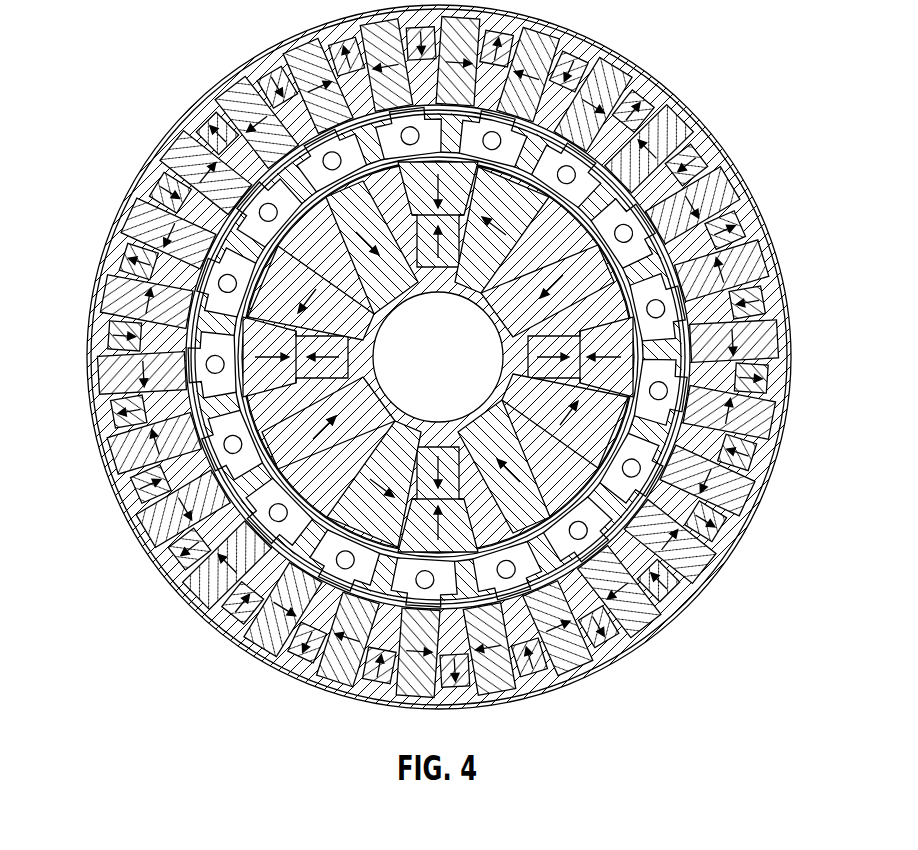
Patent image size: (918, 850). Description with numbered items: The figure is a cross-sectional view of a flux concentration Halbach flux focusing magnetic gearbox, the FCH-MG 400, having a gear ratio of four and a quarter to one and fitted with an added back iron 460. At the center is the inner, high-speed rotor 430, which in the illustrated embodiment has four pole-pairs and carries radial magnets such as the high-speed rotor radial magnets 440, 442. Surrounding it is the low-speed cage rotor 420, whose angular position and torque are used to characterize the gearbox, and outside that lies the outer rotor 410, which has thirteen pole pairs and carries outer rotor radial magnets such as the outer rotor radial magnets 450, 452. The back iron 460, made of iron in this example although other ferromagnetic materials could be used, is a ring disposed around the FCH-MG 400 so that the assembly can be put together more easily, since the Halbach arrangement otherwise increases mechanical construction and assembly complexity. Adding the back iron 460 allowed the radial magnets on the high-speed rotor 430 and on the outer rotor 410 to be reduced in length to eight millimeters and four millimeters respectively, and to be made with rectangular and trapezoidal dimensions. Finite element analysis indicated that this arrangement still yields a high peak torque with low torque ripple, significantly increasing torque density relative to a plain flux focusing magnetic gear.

The flux concentration Halbach magnetic gearbox 400 is at (115, 53).
The outer rotor 410 is at (706, 520).
The low-speed cage rotor 420 is at (627, 108).
The inner high-speed rotor 430 is at (695, 272).
The high-speed rotor radial magnet 440 is at (130, 477).
The high-speed rotor radial magnet 442 is at (203, 579).
The outer rotor radial magnet 450 is at (302, 97).
The outer rotor radial magnet 452 is at (341, 57).
The back iron 460 is at (707, 159).